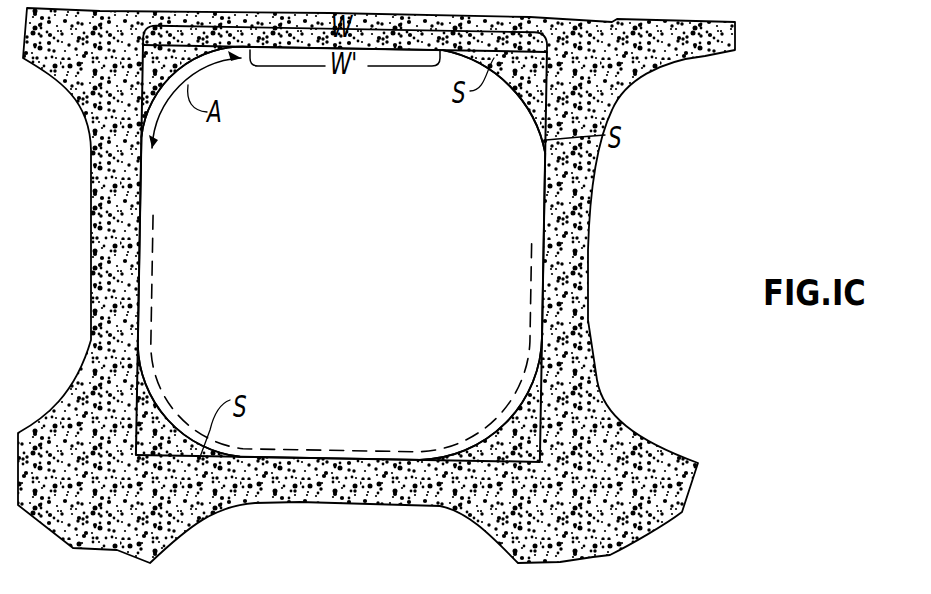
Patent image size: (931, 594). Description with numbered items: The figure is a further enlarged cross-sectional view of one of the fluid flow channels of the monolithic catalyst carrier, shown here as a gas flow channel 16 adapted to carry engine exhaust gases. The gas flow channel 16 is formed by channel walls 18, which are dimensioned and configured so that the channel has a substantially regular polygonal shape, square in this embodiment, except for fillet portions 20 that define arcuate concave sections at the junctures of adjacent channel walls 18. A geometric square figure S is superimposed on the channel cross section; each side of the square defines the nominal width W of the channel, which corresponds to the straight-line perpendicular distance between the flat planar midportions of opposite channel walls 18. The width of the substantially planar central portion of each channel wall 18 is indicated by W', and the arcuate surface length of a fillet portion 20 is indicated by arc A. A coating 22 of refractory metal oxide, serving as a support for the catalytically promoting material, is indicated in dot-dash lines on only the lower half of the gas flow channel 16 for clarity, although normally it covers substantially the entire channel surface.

The gas flow channel 16 is at (63, 254).
The channel wall 18 is at (117, 233).
The fillet portion 20 is at (183, 60).
The coating 22 is at (453, 430).